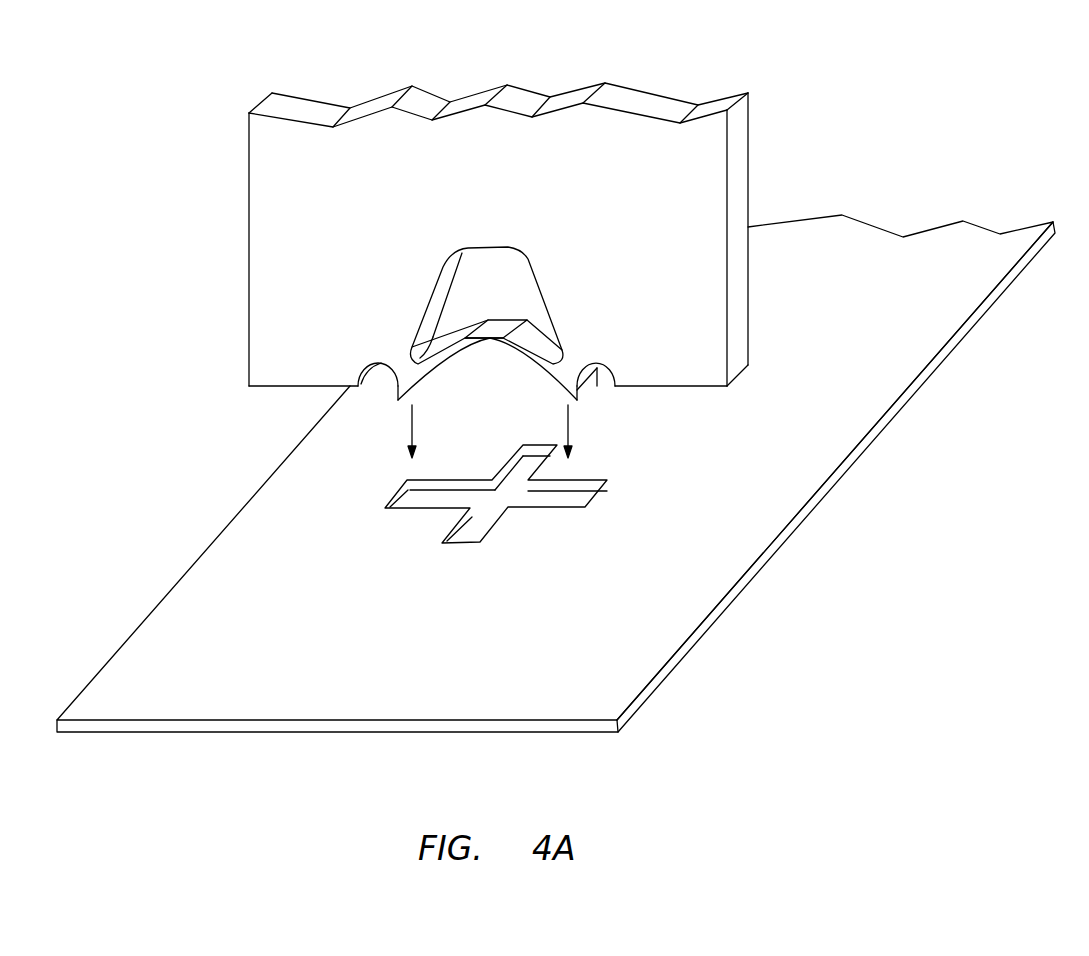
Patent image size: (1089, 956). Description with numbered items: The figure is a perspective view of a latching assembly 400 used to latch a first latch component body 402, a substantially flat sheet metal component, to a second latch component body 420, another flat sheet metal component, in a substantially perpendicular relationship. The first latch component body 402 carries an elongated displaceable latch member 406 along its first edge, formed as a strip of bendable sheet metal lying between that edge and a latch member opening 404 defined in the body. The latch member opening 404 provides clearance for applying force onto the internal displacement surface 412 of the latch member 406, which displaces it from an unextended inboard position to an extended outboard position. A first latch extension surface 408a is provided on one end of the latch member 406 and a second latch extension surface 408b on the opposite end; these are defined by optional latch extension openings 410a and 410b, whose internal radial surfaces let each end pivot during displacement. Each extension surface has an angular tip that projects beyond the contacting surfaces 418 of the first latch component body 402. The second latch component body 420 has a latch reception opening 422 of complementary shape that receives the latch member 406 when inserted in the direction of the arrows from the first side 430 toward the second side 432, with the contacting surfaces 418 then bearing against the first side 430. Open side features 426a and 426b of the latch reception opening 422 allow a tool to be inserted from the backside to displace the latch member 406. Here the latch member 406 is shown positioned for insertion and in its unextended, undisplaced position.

The latching assembly 400 is at (891, 58).
The first latch component body 402 is at (738, 162).
The latch member opening 404 is at (512, 263).
The displaceable latch member 406 is at (483, 347).
The first latch extension surface 408a is at (398, 398).
The second latch extension surface 408b is at (588, 383).
The first latch extension opening 410a is at (383, 366).
The second latch extension opening 410b is at (600, 373).
The internal displacement surface 412 is at (500, 323).
The contacting surfaces 418 is at (275, 388).
The second latch component body 420 is at (848, 462).
The latch reception opening 422 is at (500, 500).
The open side feature 426a is at (470, 533).
The open side feature 426b is at (523, 472).
The first side 430 is at (748, 515).
The second side 432 is at (645, 702).